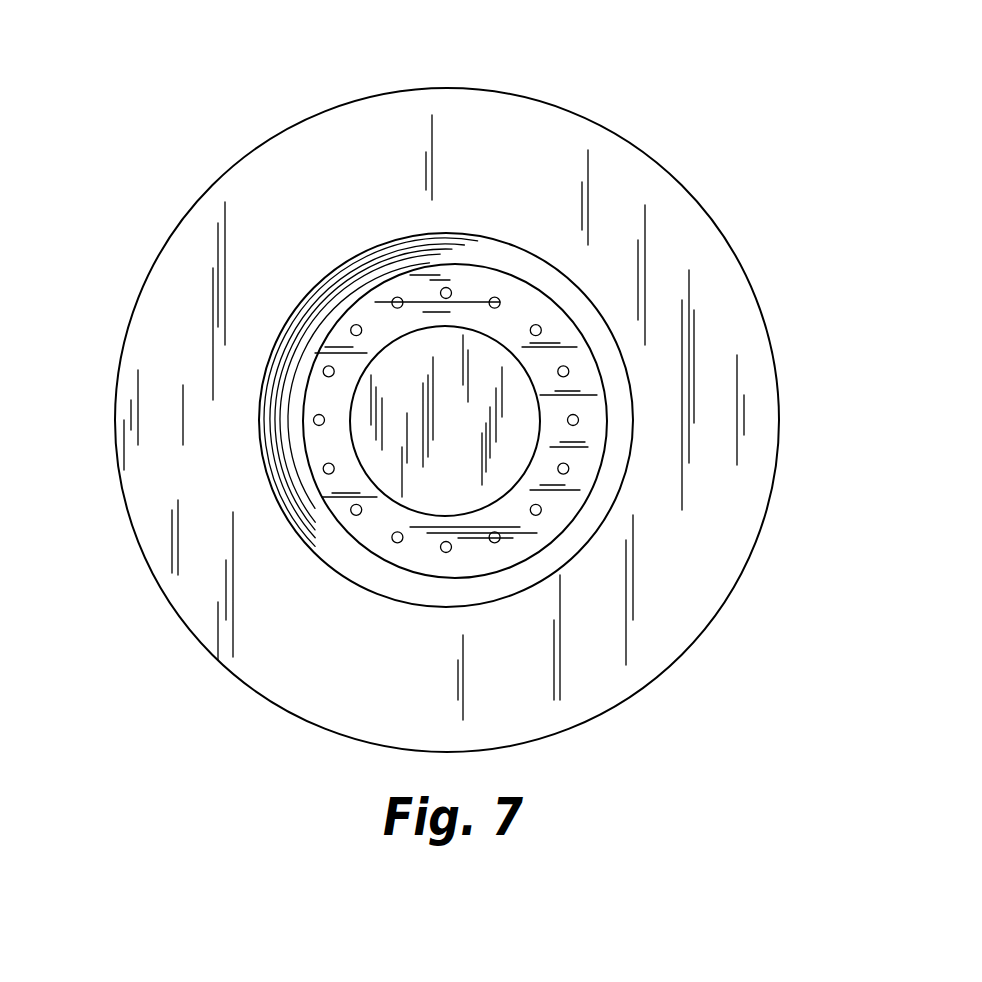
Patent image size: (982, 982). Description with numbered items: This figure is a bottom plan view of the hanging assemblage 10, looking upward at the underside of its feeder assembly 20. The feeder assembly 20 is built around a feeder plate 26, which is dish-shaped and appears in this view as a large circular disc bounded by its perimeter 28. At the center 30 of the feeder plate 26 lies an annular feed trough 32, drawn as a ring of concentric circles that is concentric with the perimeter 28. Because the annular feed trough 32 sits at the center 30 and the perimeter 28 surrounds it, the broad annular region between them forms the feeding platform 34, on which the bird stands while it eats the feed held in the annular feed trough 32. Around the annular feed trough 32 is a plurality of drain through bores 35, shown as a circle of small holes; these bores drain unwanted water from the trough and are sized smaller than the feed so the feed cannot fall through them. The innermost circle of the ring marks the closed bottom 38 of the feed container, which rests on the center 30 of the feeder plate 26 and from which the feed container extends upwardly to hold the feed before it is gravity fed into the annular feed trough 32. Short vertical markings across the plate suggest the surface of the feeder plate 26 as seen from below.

The hanging assemblage 10 is at (115, 108).
The feeder assembly 20 is at (142, 290).
The perimeter 28 is at (128, 521).
The feeder plate 26 is at (257, 610).
The feeding platform 34 is at (327, 665).
The annular feed trough 32 is at (470, 562).
The drain through bores 35 is at (356, 325).
The center 30 is at (482, 348).
The closed bottom 38 is at (462, 462).